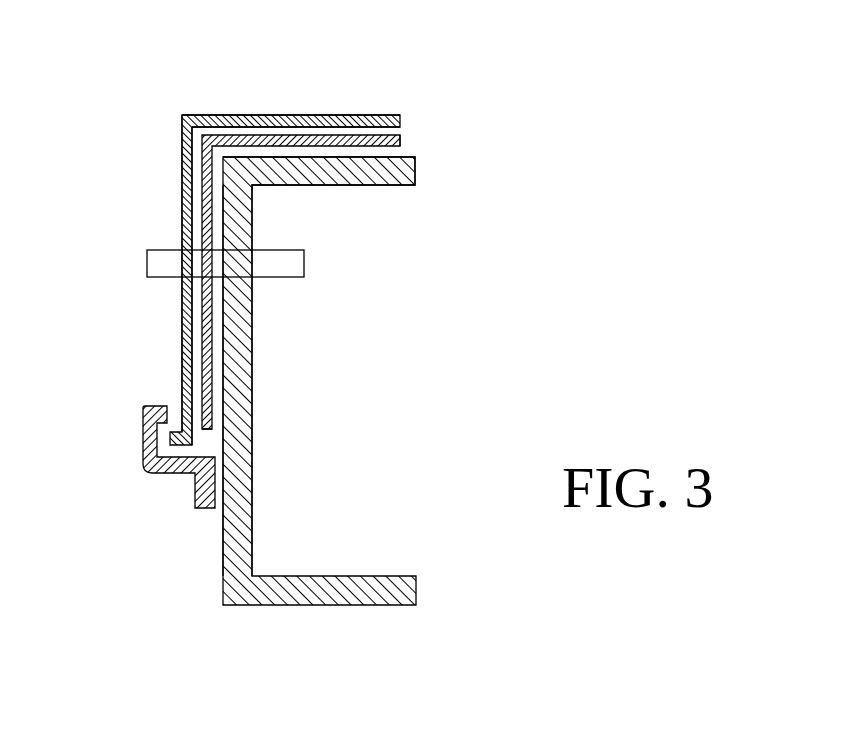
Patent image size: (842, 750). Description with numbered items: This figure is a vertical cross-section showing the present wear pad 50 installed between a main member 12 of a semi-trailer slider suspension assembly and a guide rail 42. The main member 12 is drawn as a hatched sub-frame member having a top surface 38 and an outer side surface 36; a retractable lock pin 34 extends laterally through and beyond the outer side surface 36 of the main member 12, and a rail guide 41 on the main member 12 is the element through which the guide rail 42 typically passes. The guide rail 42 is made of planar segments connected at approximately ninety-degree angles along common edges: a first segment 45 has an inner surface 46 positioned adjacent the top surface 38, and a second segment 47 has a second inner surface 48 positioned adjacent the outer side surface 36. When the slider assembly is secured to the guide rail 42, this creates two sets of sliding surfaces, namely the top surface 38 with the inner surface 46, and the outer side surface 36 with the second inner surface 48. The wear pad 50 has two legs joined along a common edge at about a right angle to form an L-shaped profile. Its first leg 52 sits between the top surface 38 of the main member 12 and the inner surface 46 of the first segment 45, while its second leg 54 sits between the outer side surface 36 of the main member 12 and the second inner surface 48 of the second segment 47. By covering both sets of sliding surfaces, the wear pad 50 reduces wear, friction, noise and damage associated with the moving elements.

The main member 12 is at (395, 589).
The lock pin 34 is at (292, 269).
The outer side surface 36 is at (226, 194).
The top surface 38 is at (415, 157).
The rail guide 41 is at (143, 455).
The guide rail 42 is at (183, 115).
The first segment 45 is at (229, 115).
The inner surface 46 is at (325, 125).
The second segment 47 is at (182, 303).
The second inner surface 48 is at (192, 160).
The wear pad 50 is at (387, 143).
The first leg 52 is at (278, 143).
The second leg 54 is at (220, 418).